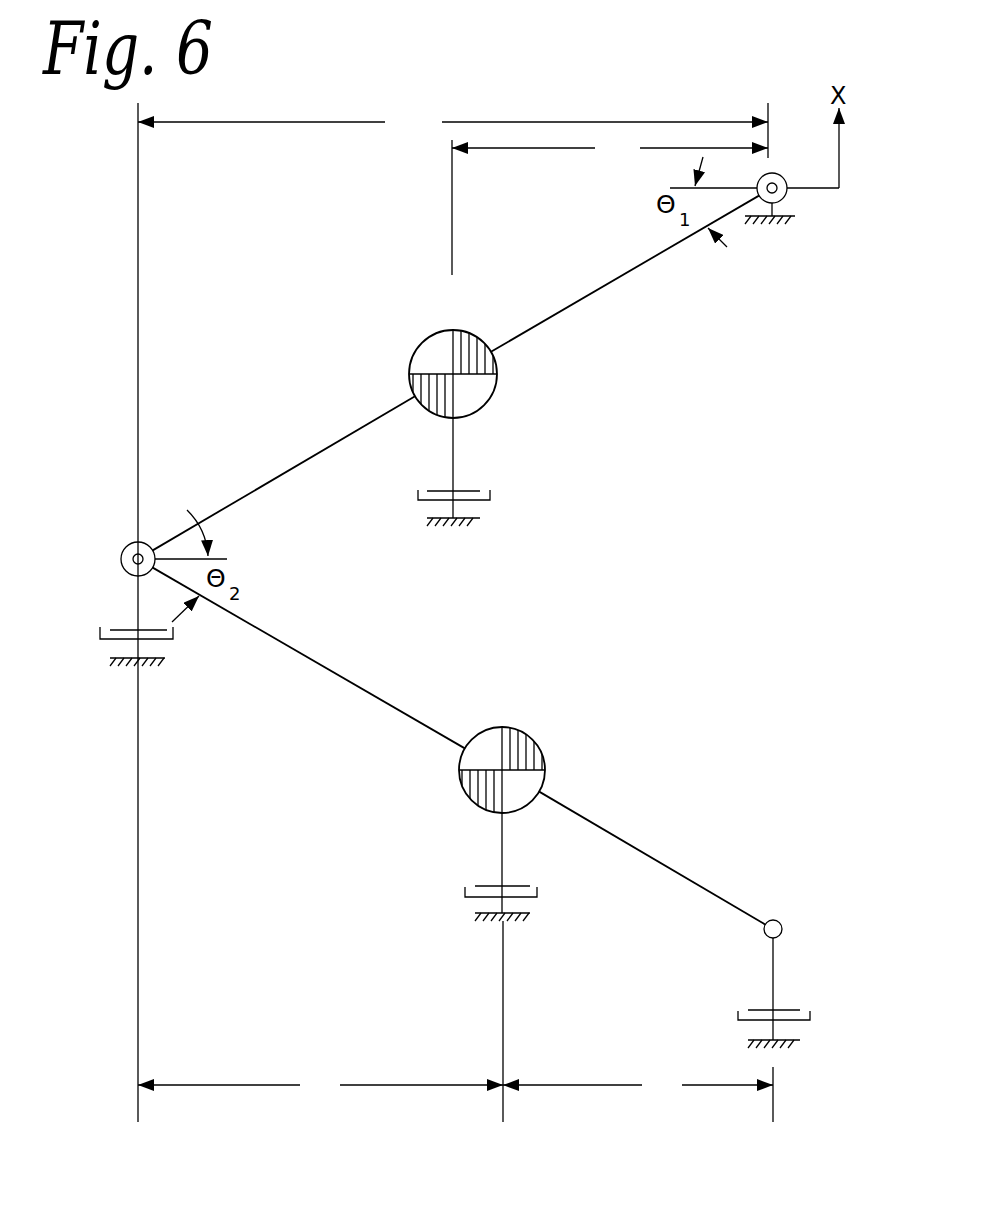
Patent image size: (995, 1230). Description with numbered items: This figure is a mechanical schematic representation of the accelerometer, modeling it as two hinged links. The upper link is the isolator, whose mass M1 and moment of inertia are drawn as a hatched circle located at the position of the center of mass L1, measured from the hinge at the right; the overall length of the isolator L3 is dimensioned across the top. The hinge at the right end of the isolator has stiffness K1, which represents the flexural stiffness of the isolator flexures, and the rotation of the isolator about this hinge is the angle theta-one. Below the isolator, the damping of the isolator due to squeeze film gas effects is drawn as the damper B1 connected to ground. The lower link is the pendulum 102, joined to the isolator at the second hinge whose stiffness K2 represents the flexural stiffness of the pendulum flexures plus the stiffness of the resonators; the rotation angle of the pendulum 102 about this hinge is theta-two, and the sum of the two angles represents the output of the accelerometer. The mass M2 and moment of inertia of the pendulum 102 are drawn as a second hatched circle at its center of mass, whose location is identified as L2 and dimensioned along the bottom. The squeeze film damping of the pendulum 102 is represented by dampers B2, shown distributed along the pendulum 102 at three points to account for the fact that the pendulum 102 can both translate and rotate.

The pendulum 102 is at (525, 7).
The flexural stiffness of the isolator flexures K1 is at (778, 185).
The flexural stiffness of the pendulum flexures K2 is at (138, 534).
The mass of the isolator M1 is at (451, 350).
The mass of the pendulum M2 is at (554, 769).
The damping of the isolator B1 is at (476, 472).
The squeeze film damping of the pendulum B2 is at (857, 1022).
The position of the center of mass of the isolator L1 is at (610, 205).
The center of mass of the pendulum L2 is at (455, 1021).
The length of the isolator L3 is at (453, 612).